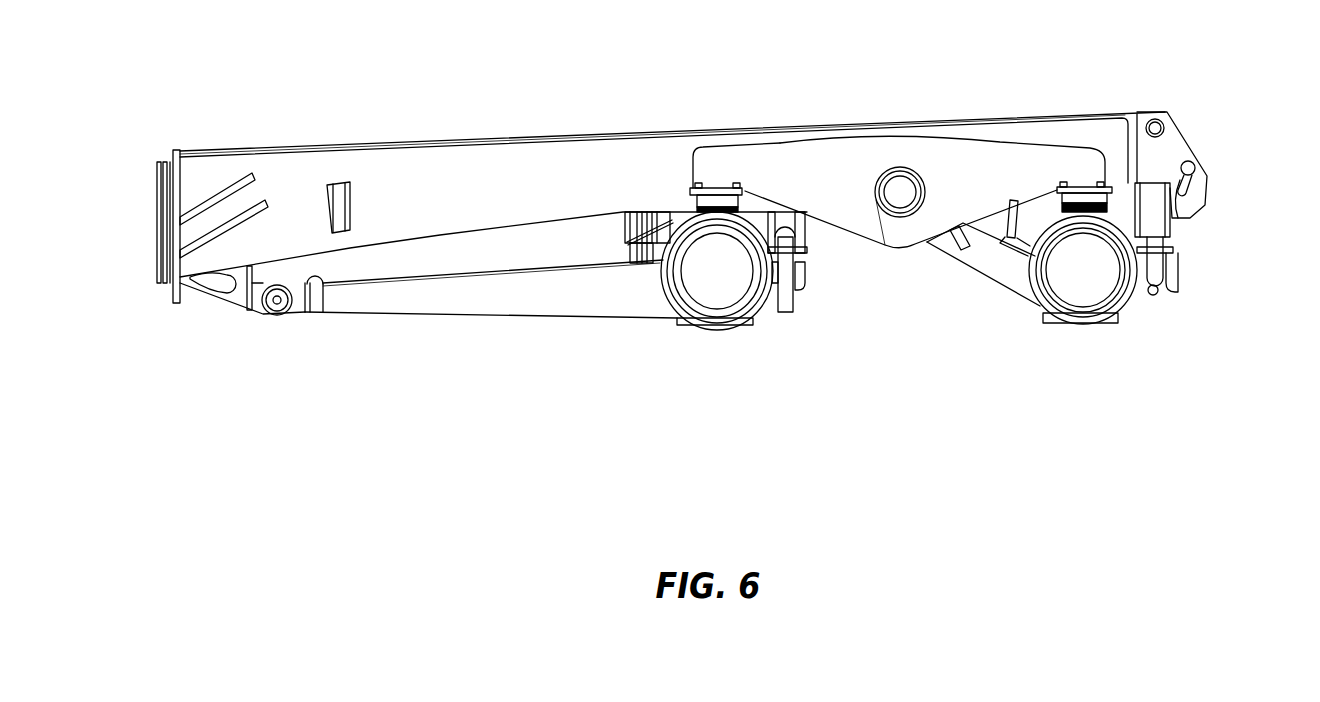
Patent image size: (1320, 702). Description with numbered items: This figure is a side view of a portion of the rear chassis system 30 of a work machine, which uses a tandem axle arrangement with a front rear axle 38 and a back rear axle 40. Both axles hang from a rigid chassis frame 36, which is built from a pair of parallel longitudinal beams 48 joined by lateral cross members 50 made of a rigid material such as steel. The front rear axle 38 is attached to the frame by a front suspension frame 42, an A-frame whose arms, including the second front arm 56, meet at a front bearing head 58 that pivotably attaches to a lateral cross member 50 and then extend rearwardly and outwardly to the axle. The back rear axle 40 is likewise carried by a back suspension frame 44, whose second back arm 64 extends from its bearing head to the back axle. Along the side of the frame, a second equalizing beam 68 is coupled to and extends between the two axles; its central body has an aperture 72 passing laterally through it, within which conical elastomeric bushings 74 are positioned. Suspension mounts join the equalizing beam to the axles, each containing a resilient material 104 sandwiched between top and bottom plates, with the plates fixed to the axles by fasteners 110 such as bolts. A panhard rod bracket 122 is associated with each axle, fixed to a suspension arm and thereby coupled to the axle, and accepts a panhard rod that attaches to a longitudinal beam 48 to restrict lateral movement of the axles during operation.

The rear chassis system 30 is at (551, 55).
The chassis frame 36 is at (467, 142).
The longitudinal beams 48 is at (405, 157).
The front bearing head 58 is at (322, 313).
The front suspension frame 42 is at (481, 298).
The second front arm 56 is at (603, 298).
The front rear axle 38 is at (717, 290).
The back rear axle 40 is at (1087, 293).
The panhard rod bracket 122 is at (802, 288).
The fasteners 110 is at (698, 160).
The second equalizing beam 68 is at (986, 150).
The resilient material 104 is at (738, 212).
The aperture 72 is at (913, 212).
The bushing 74 is at (887, 210).
The second back arm 64 is at (993, 260).
The back suspension frame 44 is at (1020, 300).
The lateral cross member 50 is at (1081, 112).